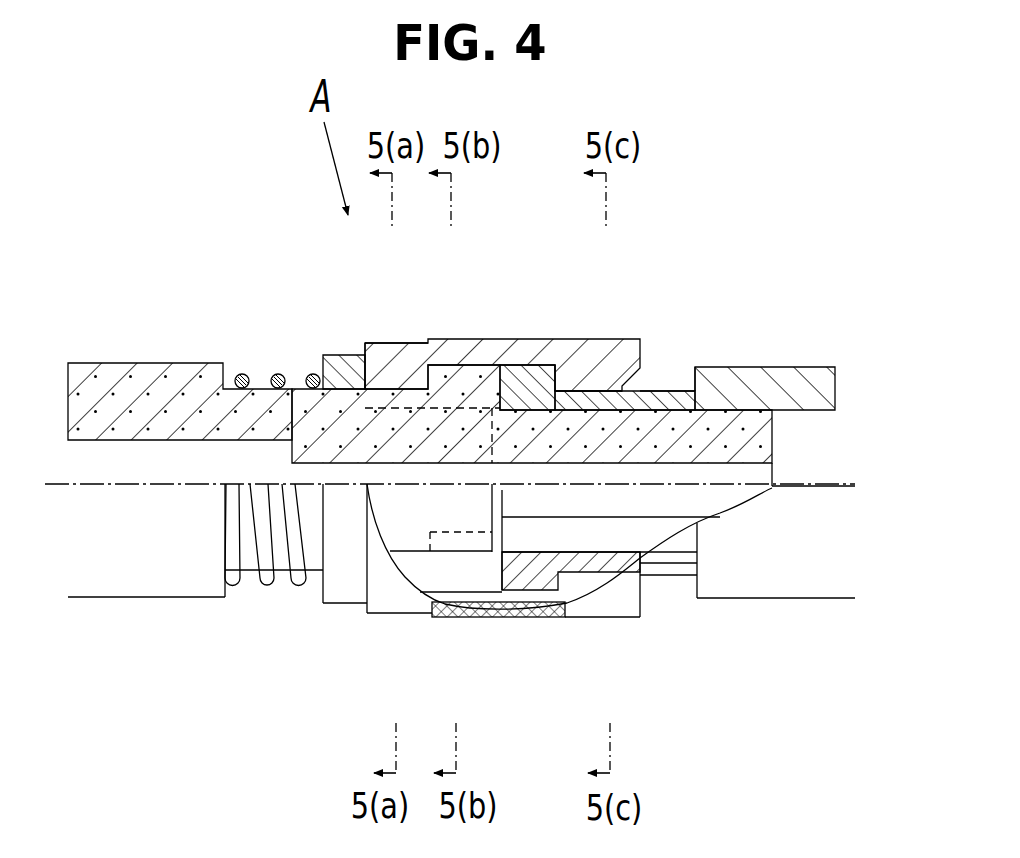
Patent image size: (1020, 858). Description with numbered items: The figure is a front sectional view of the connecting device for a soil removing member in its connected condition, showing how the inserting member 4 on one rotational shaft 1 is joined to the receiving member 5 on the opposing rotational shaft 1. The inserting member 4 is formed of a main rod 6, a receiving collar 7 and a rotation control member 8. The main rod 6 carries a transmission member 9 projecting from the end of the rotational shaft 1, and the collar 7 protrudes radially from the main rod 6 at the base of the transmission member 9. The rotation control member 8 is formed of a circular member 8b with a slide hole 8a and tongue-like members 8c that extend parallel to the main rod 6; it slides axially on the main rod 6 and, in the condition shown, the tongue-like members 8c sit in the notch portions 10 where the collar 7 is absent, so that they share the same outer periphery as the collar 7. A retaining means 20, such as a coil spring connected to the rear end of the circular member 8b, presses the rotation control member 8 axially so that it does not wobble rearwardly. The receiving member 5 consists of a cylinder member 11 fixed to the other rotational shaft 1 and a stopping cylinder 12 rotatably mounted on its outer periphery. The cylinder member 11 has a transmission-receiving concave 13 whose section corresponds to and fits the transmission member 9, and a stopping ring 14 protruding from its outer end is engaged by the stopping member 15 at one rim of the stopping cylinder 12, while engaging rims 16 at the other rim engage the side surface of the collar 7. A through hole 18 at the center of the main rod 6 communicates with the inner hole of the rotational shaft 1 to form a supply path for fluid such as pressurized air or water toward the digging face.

The rotational shaft 1 is at (118, 387).
The inserting member 4 is at (233, 340).
The receiving member 5 is at (707, 320).
The main rod 6 is at (248, 557).
The receiving collar 7 is at (453, 392).
The rotation control member 8 is at (318, 602).
The slide hole 8a is at (337, 372).
The circular member 8b is at (347, 585).
The tongue-like members 8c is at (410, 522).
The transmission member 9 is at (702, 430).
The notch portions 10 is at (498, 505).
The cylinder member 11 is at (655, 397).
The stopping cylinder 12 is at (468, 358).
The transmission-receiving concave 13 is at (600, 395).
The stopping ring 14 is at (560, 378).
The stopping member 15 is at (557, 366).
The engaging rims 16 is at (398, 380).
The through hole 18 is at (178, 463).
The retaining means 20 is at (273, 373).